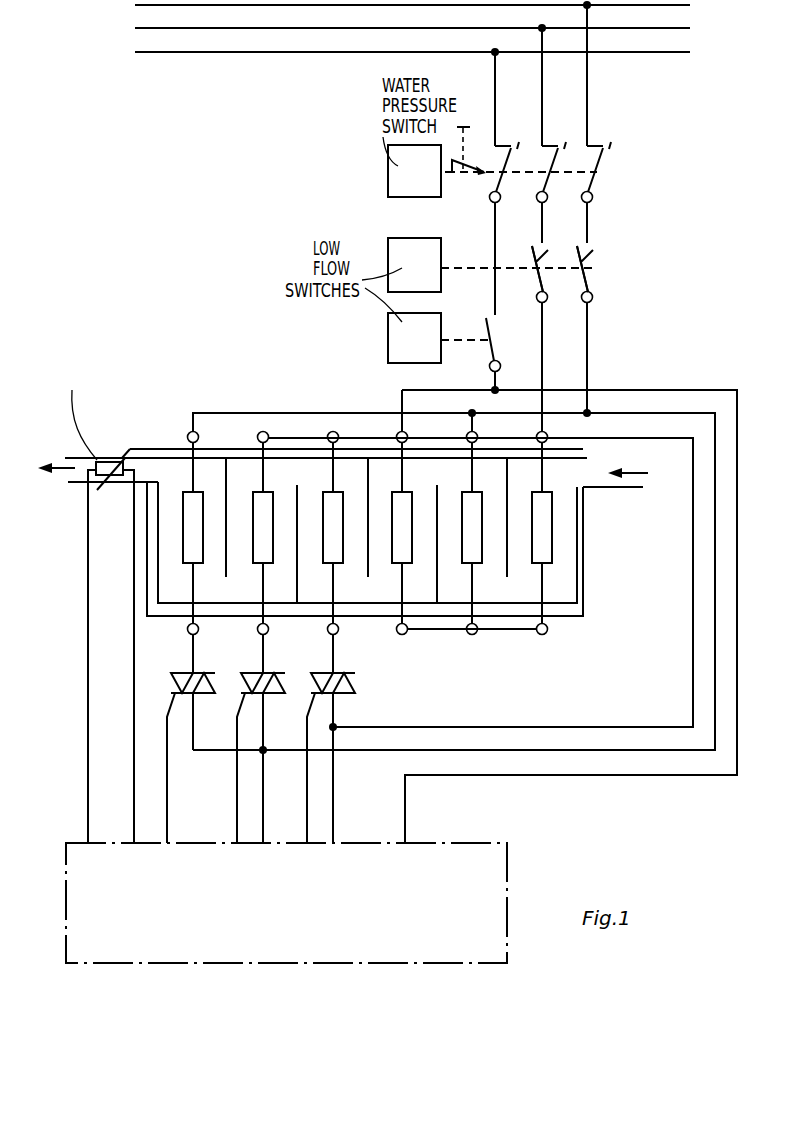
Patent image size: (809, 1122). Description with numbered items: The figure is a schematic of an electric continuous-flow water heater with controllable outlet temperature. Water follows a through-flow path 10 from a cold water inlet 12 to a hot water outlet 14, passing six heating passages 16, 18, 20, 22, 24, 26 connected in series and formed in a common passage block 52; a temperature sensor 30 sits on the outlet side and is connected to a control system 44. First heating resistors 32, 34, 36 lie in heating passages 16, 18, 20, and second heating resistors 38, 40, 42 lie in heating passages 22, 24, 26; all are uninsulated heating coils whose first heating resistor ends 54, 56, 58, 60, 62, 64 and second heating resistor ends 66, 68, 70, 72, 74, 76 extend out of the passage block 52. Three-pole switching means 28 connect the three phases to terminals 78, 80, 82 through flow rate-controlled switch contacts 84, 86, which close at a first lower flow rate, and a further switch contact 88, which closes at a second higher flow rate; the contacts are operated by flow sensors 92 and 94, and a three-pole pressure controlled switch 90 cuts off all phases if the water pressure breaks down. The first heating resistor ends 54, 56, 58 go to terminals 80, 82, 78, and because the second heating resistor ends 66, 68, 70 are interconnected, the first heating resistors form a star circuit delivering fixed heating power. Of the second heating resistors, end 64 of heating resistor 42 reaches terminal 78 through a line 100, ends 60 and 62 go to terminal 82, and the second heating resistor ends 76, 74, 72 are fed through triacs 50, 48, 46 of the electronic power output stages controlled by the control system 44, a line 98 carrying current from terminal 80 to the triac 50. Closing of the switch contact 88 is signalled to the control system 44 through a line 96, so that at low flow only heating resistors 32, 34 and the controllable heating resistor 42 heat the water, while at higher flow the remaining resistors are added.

The through-flow path 10 is at (349, 532).
The cold water inlet 12 is at (630, 468).
The hot water outlet 14 is at (80, 474).
The heating passage 16 is at (567, 552).
The heating passage 18 is at (492, 588).
The heating passage 20 is at (420, 583).
The heating passage 22 is at (345, 473).
The heating passage 24 is at (282, 490).
The heating passage 26 is at (210, 485).
The three-pole switching means 28 is at (606, 262).
The temperature sensor 30 is at (104, 460).
The first heating resistor 32 is at (541, 510).
The first heating resistor 34 is at (472, 507).
The first heating resistor 36 is at (400, 507).
The second heating resistor 38 is at (333, 545).
The second heating resistor 40 is at (263, 553).
The second heating resistor 42 is at (193, 552).
The control system 44 is at (478, 862).
The triac 46 is at (343, 696).
The triac 48 is at (272, 696).
The triac 50 is at (203, 696).
The passage block 52 is at (148, 455).
The first heating resistor end 54 is at (545, 432).
The first heating resistor end 56 is at (475, 432).
The first heating resistor end 58 is at (405, 432).
The first heating resistor end 60 is at (334, 431).
The first heating resistor end 62 is at (263, 431).
The first heating resistor end 64 is at (190, 432).
The second heating resistor end 66 is at (547, 632).
The second heating resistor end 68 is at (475, 634).
The second heating resistor end 70 is at (400, 636).
The second heating resistor end 72 is at (337, 634).
The second heating resistor end 74 is at (267, 634).
The second heating resistor end 76 is at (197, 634).
The terminal 78 is at (498, 361).
The terminal 80 is at (546, 301).
The terminal 82 is at (591, 300).
The flow rate-controlled switch contact 84 is at (552, 247).
The flow rate-controlled switch contact 86 is at (598, 247).
The flow rate-controlled switch contact 88 is at (485, 319).
The three-pole pressure controlled switch 90 is at (597, 165).
The flow rate sensor 92 is at (427, 252).
The flow rate sensor 94 is at (400, 335).
The line 96 is at (707, 390).
The line 98 is at (692, 628).
The line 100 is at (380, 410).